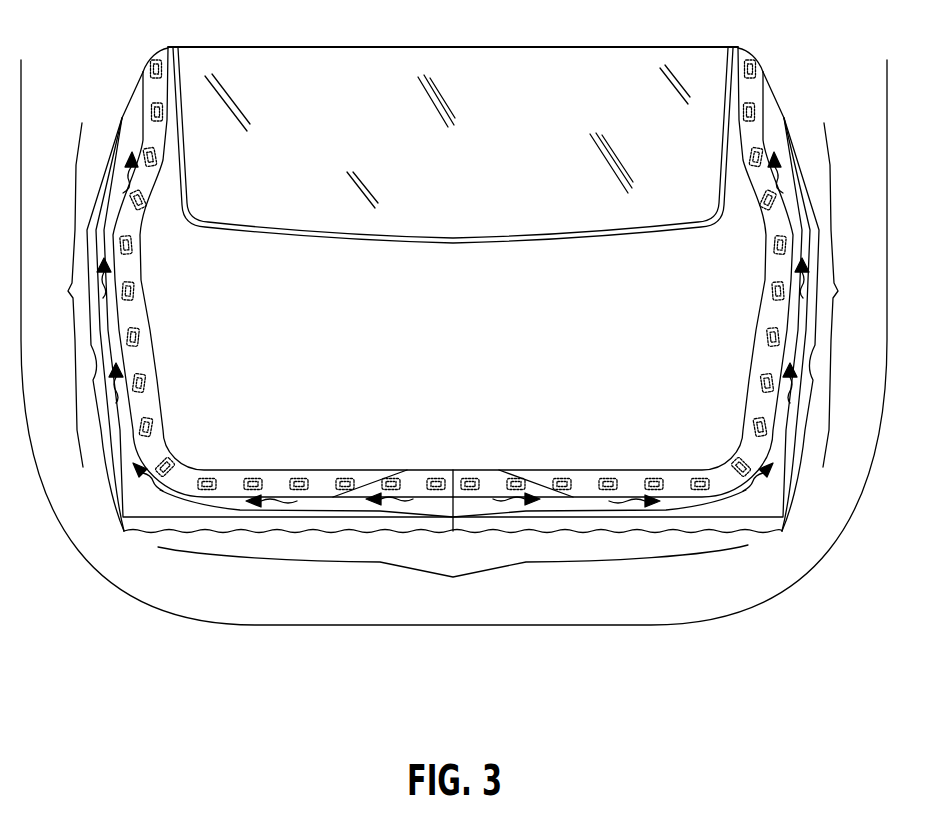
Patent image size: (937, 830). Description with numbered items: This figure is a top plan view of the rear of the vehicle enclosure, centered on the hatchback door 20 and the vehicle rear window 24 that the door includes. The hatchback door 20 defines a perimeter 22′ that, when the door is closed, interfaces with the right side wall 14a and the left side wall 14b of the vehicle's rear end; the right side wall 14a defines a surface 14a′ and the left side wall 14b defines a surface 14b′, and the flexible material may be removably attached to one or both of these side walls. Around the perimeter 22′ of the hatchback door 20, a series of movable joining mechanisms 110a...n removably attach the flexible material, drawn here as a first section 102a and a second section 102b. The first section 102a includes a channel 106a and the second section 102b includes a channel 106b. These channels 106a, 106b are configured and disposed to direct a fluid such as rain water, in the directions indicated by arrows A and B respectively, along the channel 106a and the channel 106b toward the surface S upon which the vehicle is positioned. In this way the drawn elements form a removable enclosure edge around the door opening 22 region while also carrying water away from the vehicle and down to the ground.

The hatchback door 20 is at (372, 307).
The vehicle rear window 24 is at (525, 70).
The liftgate edge 22 is at (453, 470).
The perimeter 22′ is at (65, 283).
The right side wall 14a is at (785, 116).
The surface 14a′ is at (862, 95).
The left side wall 14b is at (121, 116).
The surface 14b′ is at (112, 132).
The first section of flexible material 102a is at (803, 193).
The second section of flexible material 102b is at (103, 193).
The channel 106a is at (728, 497).
The channel 106b is at (135, 458).
The movable joining mechanisms 110a...n is at (432, 457).
The arrow A is at (781, 155).
The arrow B is at (125, 155).
The surface S is at (715, 596).